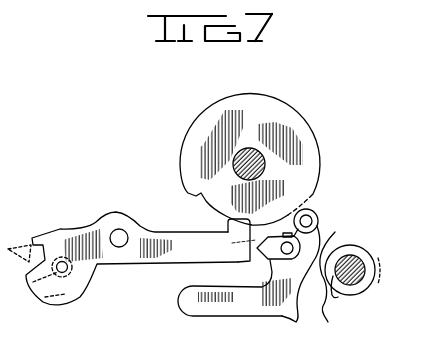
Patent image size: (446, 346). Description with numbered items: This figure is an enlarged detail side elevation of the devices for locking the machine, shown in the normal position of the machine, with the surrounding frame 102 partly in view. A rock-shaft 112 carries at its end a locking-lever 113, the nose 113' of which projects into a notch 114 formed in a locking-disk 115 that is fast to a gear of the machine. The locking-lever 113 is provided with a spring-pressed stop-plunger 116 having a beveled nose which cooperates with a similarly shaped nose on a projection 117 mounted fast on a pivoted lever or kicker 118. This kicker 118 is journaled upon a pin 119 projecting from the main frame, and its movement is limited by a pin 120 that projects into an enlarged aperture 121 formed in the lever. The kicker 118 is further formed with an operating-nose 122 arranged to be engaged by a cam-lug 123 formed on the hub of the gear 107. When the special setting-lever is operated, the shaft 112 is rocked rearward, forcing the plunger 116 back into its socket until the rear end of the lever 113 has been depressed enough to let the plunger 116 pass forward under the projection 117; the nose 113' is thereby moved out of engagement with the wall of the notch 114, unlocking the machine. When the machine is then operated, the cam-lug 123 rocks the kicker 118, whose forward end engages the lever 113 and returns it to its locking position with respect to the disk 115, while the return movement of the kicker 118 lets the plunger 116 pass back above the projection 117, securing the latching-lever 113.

The frame 102 is at (10, 186).
The gear 107 is at (330, 318).
The rock-shaft 112 is at (132, 209).
The locking-lever 113 is at (123, 258).
The nose 113' is at (207, 235).
The notch 114 is at (239, 174).
The locking-disk 115 is at (297, 118).
The spring-pressed stop-plunger 116 is at (246, 284).
The projection 117 is at (278, 254).
The pivoted lever or kicker 118 is at (292, 303).
The pin 119 is at (291, 247).
The pin 120 is at (311, 220).
The enlarged aperture 121 is at (304, 210).
The operating-nose 122 is at (352, 263).
The cam-lug 123 is at (334, 297).